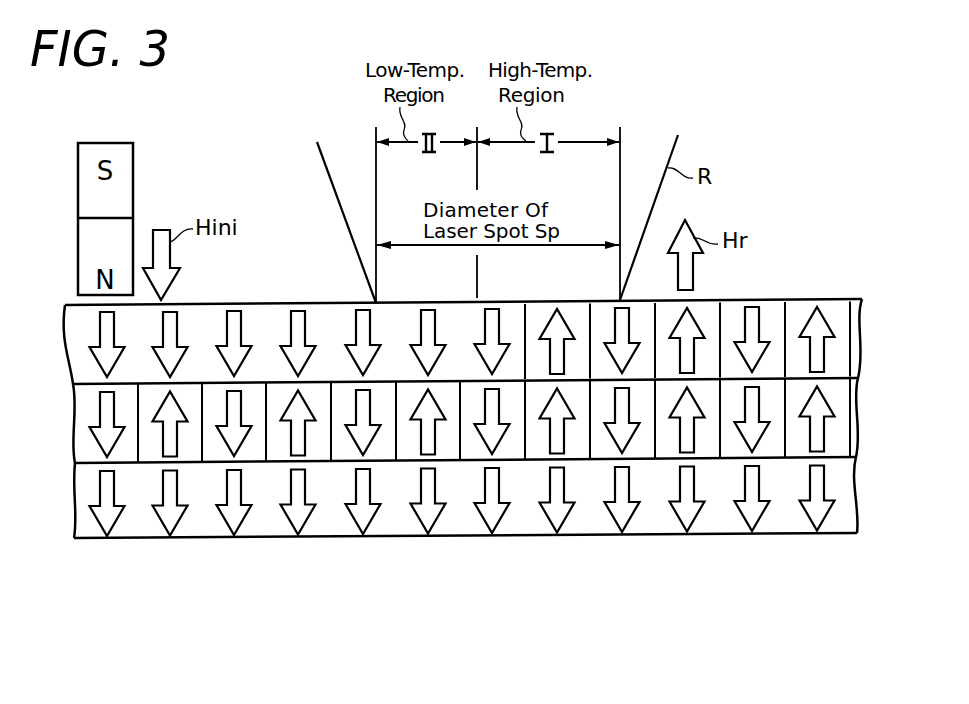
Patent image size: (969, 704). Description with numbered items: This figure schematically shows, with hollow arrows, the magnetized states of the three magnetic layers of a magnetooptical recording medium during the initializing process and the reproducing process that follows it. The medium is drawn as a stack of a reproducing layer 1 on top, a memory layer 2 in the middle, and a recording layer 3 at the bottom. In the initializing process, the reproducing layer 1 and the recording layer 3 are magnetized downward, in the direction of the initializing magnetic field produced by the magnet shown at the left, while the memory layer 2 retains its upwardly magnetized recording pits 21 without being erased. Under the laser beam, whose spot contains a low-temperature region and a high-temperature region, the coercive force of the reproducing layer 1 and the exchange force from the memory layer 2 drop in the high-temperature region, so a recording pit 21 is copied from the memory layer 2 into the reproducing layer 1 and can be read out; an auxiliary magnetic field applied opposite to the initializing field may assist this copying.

The reproducing layer 1 is at (75, 372).
The memory layer 2 is at (75, 450).
The recording layer 3 is at (97, 540).
The recording pit 21 is at (190, 453).